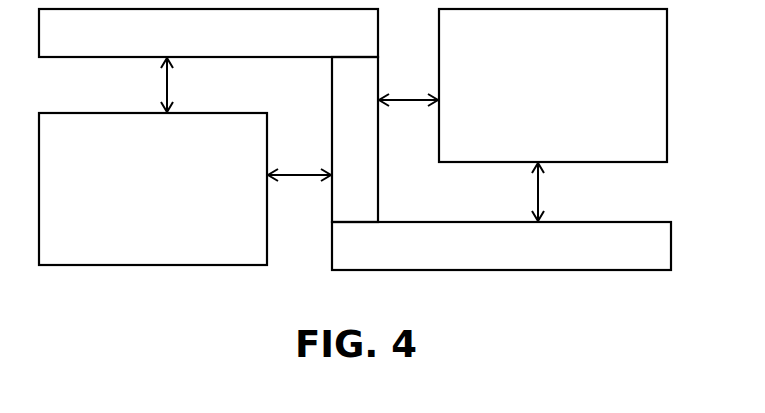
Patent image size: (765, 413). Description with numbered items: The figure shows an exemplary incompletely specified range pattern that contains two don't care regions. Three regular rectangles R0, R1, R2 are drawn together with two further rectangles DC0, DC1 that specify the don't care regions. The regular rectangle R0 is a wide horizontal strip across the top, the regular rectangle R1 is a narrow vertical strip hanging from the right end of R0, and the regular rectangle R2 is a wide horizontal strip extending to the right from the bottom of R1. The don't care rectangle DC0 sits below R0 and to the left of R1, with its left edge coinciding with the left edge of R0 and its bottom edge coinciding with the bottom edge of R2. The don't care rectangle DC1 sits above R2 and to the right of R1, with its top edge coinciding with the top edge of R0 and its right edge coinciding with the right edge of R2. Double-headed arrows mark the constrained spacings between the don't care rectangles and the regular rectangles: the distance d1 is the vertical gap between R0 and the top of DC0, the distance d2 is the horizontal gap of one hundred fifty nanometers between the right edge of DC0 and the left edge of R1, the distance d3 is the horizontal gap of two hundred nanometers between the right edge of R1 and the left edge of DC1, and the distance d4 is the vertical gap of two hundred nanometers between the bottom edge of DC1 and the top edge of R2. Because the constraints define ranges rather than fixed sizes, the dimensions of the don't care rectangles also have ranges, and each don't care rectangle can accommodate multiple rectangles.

The regular rectangle R0 is at (208, 33).
The regular rectangle R1 is at (355, 139).
The regular rectangle R2 is at (501, 246).
The don't care region rectangle DC0 is at (153, 189).
The don't care region rectangle DC1 is at (553, 85).
The spacing distance d1 is at (149, 85).
The spacing distance d2 is at (299, 159).
The spacing distance d3 is at (408, 82).
The spacing distance d4 is at (519, 192).